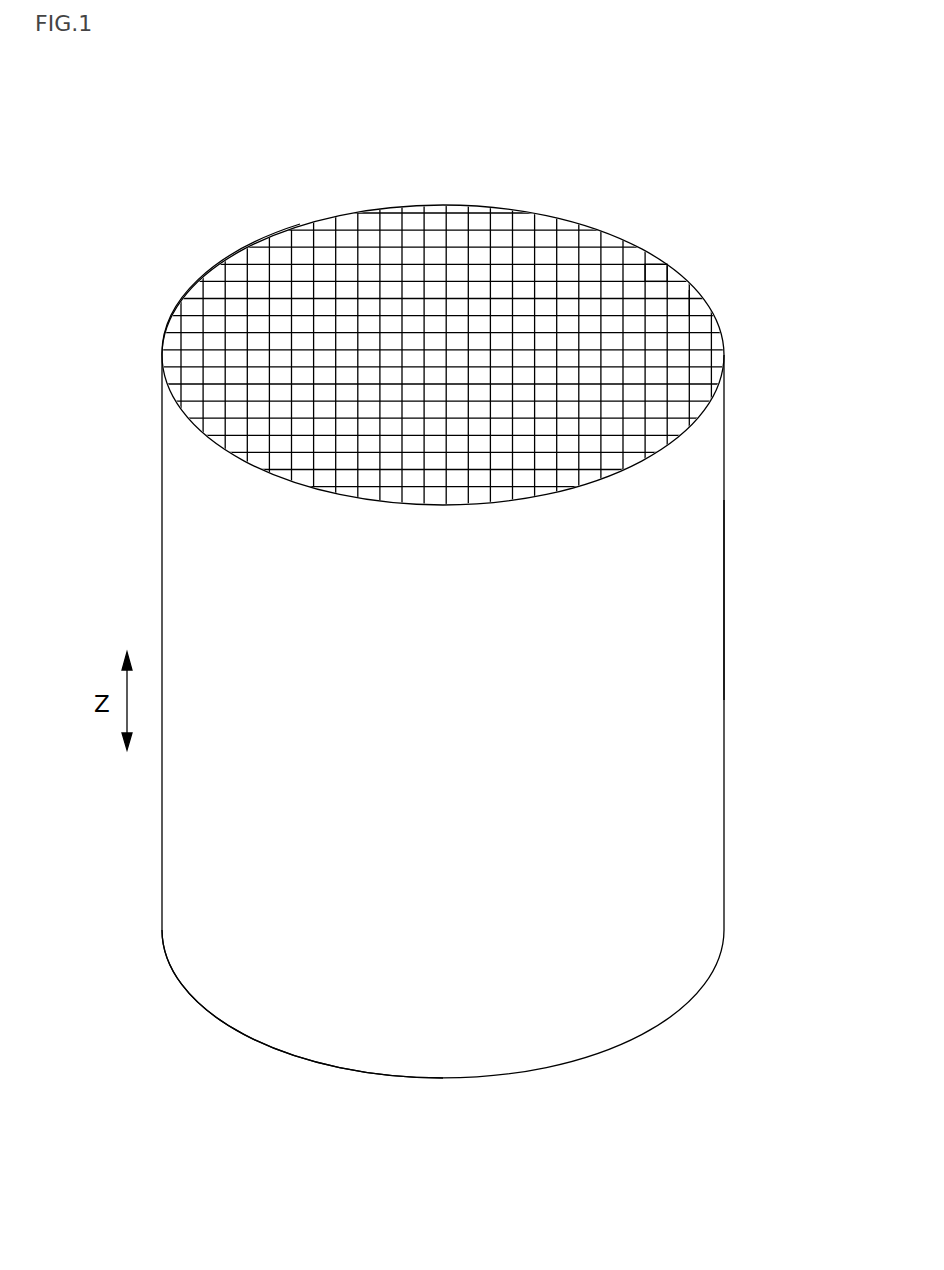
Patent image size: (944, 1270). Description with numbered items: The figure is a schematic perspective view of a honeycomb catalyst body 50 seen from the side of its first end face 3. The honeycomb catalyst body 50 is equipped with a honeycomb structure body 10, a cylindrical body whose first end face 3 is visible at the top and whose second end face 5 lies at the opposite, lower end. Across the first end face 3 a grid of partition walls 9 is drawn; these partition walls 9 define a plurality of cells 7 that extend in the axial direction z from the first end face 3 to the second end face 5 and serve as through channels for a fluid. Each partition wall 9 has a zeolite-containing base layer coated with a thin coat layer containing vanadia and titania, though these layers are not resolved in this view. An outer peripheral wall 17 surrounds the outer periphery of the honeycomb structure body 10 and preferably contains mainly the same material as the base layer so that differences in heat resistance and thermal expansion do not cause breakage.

The honeycomb catalyst body 50 is at (660, 111).
The honeycomb structure body 10 is at (586, 223).
The cell 7 is at (653, 286).
The partition wall 9 is at (690, 302).
The first end face 3 is at (187, 292).
The outer peripheral wall 17 is at (693, 585).
The second end face 5 is at (187, 993).